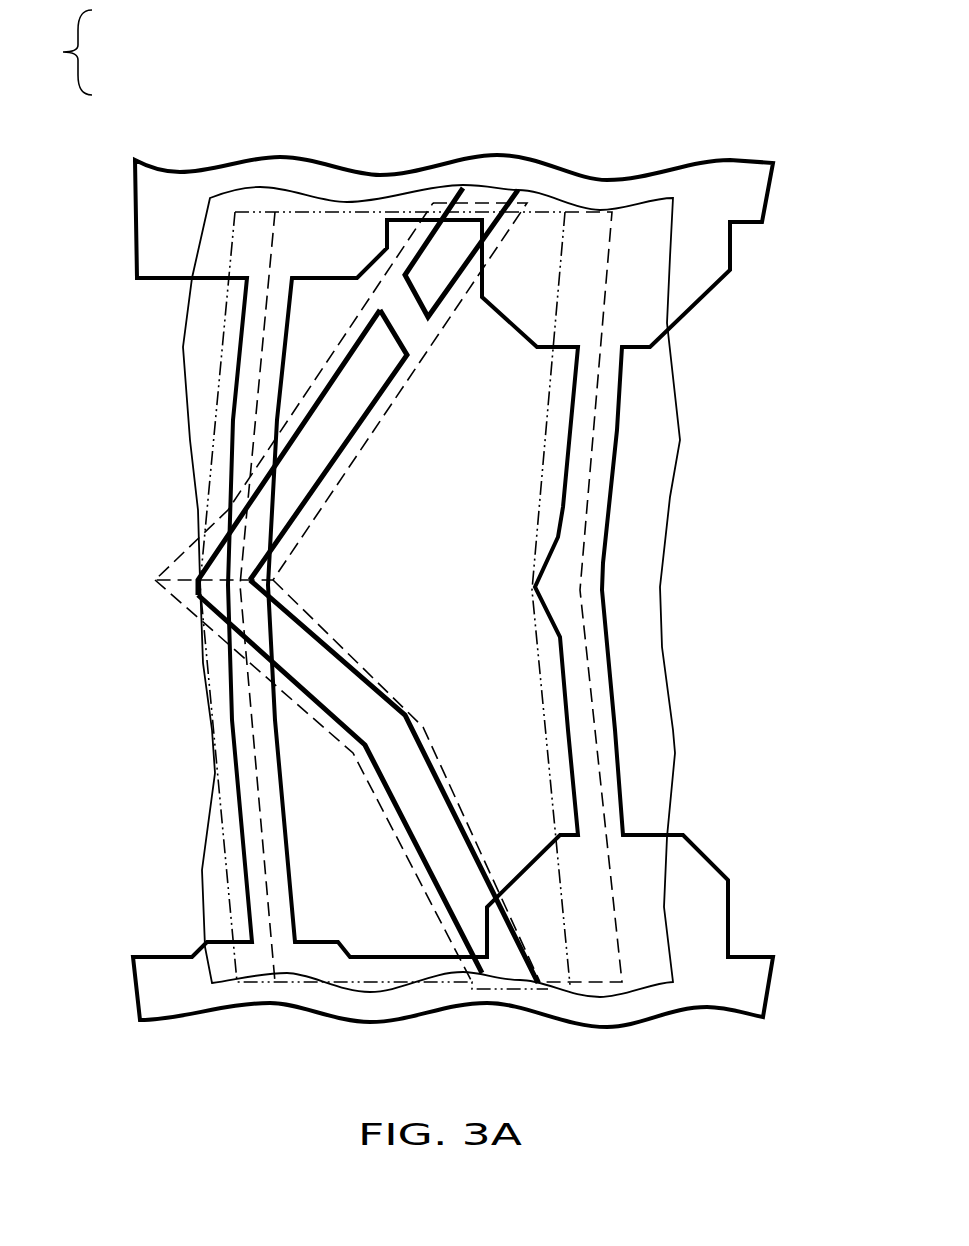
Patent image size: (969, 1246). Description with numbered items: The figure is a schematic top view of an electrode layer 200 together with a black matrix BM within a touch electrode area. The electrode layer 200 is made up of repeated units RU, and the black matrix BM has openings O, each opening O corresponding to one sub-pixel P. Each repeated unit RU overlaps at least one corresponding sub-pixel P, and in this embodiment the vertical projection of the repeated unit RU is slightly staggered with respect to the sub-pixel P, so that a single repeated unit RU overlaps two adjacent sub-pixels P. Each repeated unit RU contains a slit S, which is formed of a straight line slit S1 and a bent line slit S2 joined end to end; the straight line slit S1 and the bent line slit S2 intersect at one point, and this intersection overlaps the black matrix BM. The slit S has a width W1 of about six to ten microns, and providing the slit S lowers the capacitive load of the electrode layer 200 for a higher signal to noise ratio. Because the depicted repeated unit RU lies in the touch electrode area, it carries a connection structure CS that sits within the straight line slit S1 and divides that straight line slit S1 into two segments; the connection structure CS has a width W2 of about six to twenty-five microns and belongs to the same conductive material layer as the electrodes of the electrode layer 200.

The slit S is at (79, 52).
The straight line slit S1 is at (322, 502).
The bent line slit S2 is at (420, 725).
The black matrix BM is at (742, 195).
The electrode layer 200 is at (658, 585).
The repeated unit RU is at (543, 688).
The sub-pixel P is at (600, 767).
The opening O is at (563, 508).
The connection structure CS is at (415, 337).
The width of the slit W1 is at (337, 378).
The width of the connection structure W2 is at (415, 302).